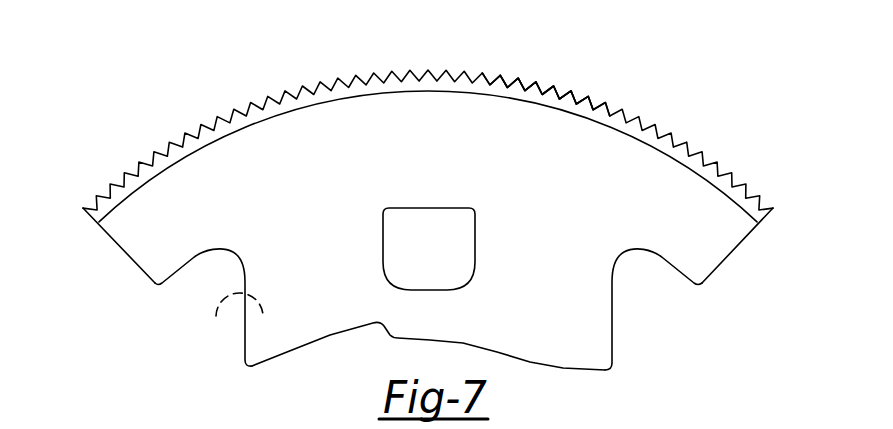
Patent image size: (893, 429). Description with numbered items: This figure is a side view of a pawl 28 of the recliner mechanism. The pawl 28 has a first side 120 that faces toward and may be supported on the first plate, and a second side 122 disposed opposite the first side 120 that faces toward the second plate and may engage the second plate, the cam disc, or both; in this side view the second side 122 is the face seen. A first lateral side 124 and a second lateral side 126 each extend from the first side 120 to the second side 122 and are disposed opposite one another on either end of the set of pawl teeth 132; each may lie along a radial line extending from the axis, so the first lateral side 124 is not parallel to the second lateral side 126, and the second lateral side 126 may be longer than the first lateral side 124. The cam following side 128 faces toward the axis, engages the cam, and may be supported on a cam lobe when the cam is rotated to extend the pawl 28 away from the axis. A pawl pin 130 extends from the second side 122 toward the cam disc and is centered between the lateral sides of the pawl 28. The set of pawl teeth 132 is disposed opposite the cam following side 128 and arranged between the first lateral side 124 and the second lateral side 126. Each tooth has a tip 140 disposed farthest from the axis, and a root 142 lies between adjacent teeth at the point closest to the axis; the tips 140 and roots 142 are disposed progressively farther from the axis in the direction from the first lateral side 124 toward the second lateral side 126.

The pawl 28 is at (420, 189).
The first side 120 is at (230, 319).
The second side 122 is at (441, 151).
The first lateral side 124 is at (125, 258).
The second lateral side 126 is at (733, 258).
The cam following side 128 is at (477, 345).
The pawl pin 130 is at (441, 257).
The set of pawl teeth 132 is at (296, 84).
The tip 140 is at (610, 102).
The root 142 is at (595, 97).